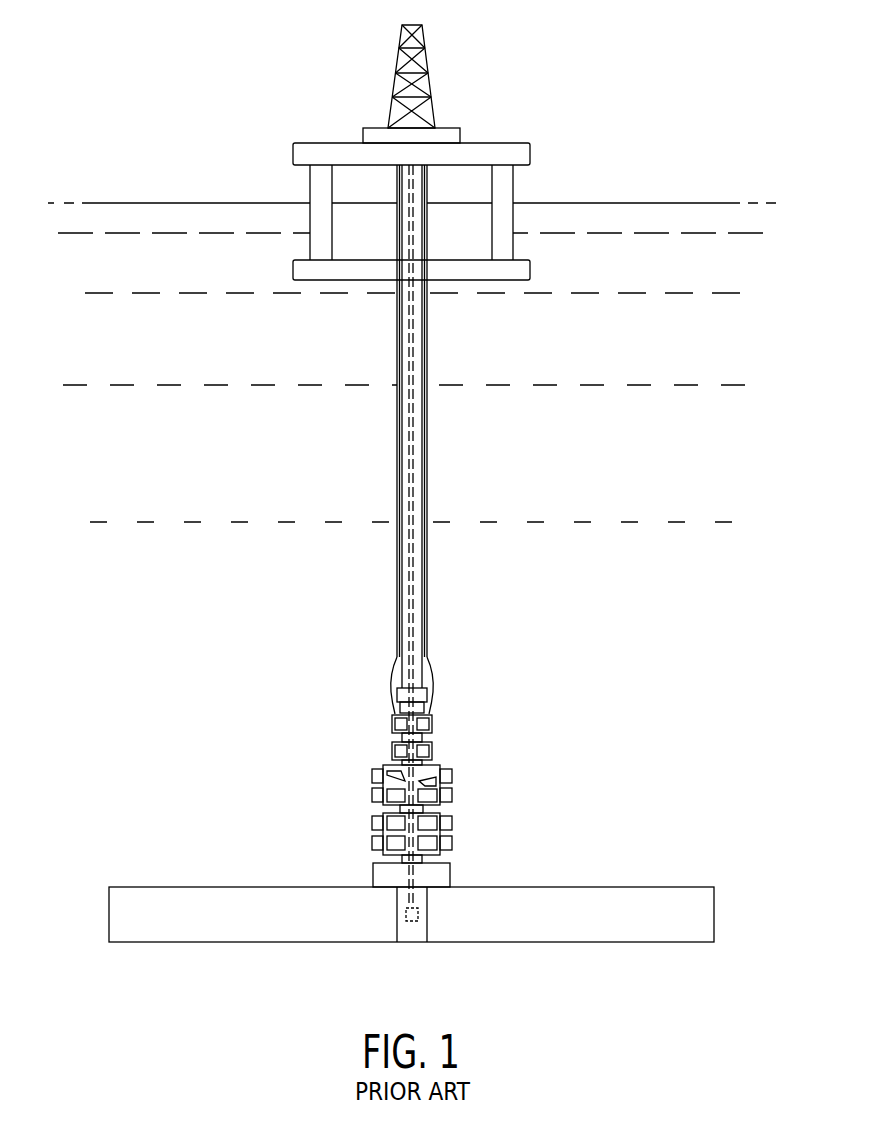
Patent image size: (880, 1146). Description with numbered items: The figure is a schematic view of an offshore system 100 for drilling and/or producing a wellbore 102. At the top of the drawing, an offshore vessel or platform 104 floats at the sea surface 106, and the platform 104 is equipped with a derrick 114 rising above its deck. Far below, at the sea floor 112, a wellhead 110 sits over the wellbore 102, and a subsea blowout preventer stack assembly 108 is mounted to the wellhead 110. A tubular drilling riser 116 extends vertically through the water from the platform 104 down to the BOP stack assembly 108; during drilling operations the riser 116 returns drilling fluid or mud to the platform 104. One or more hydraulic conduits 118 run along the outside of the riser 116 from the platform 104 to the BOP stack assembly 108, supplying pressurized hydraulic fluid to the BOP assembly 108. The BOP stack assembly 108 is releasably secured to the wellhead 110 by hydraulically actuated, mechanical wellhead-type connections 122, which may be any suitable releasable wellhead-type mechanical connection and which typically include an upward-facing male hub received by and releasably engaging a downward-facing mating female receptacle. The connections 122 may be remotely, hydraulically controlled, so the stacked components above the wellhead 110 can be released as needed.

The offshore system 100 is at (607, 70).
The wellbore 102 is at (533, 888).
The offshore vessel or platform 104 is at (495, 143).
The sea surface 106 is at (640, 203).
The subsea blowout preventer stack assembly 108 is at (338, 786).
The wellhead 110 is at (452, 873).
The sea floor 112 is at (640, 888).
The derrick 114 is at (421, 36).
The tubular drilling riser 116 is at (427, 431).
The hydraulic conduits 118 is at (427, 479).
The hydraulically actuated mechanical wellhead-type connections 122 is at (392, 858).